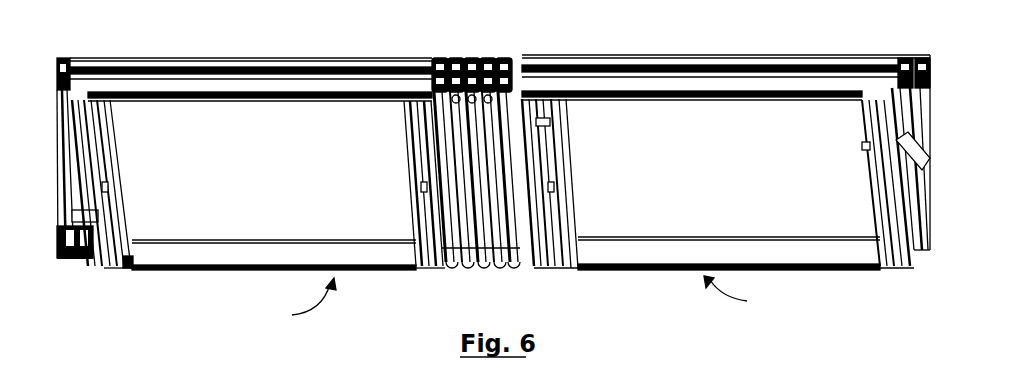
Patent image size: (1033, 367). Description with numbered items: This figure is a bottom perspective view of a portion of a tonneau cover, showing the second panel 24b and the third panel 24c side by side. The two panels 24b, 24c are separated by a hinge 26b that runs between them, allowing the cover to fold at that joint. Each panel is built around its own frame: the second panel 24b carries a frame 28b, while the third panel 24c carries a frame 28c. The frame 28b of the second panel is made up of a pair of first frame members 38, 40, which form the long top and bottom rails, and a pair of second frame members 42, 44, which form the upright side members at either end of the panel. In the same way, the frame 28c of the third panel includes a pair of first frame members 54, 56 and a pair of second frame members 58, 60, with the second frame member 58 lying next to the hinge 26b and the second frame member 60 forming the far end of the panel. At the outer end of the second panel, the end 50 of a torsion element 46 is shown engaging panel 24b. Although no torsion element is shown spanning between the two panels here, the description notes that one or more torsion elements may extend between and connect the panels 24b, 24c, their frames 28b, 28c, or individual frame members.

The second panel 24b is at (285, 178).
The third panel 24c is at (738, 178).
The hinge 26b is at (508, 234).
The frame 28b is at (295, 302).
The frame 28c is at (741, 294).
The first frame member 38 is at (180, 258).
The first frame member 40 is at (264, 80).
The second frame member 42 is at (105, 120).
The second frame member 44 is at (412, 110).
The torsion element 46 is at (70, 262).
The end of the torsion element 50 is at (126, 268).
The first frame member 54 is at (838, 250).
The first frame member 56 is at (791, 80).
The second frame member 58 is at (571, 254).
The second frame member 60 is at (910, 258).